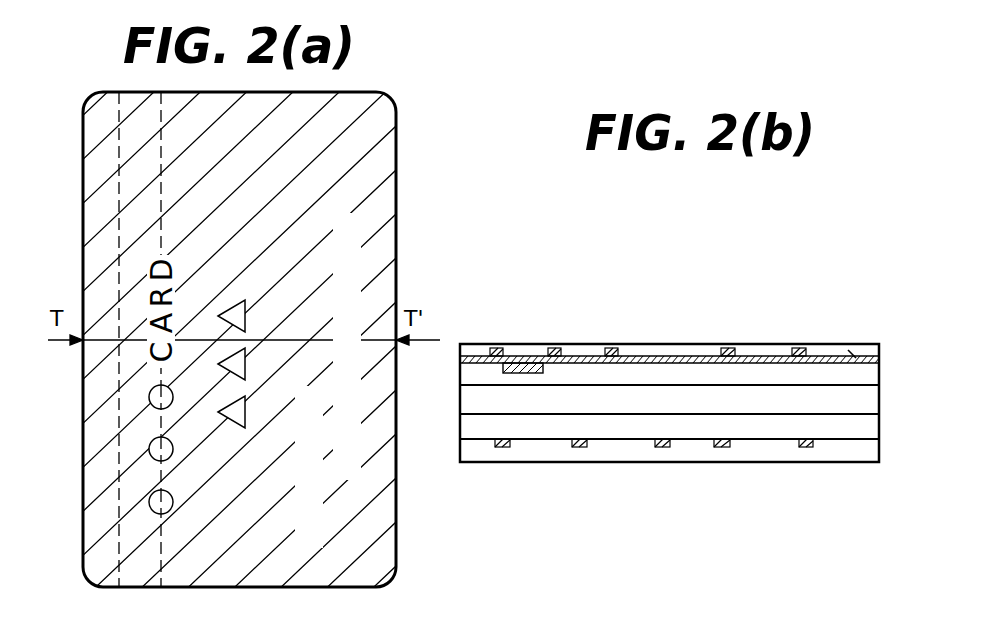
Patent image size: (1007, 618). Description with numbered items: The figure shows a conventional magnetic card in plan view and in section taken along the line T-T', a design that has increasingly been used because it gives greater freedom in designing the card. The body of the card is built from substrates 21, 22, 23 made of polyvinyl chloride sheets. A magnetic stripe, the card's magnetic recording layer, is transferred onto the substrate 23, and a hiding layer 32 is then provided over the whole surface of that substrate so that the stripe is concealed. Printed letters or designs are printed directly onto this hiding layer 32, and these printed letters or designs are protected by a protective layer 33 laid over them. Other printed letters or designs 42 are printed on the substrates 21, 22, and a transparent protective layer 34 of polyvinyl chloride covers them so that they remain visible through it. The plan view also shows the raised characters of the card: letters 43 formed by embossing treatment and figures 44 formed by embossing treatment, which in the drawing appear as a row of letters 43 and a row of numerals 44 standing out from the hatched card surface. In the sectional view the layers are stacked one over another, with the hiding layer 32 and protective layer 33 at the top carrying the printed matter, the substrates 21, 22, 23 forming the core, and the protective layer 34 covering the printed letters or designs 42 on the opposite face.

The hiding layer 32 is at (853, 352).
The protective layer 33 is at (580, 350).
The printed letters or designs 42 is at (803, 450).
The letters formed by embossing treatment 43 is at (325, 531).
The figures formed by embossing treatment 44 is at (362, 219).
The substrate 21 is at (628, 400).
The substrate 22 is at (694, 425).
The substrate 23 is at (560, 374).
The protective layer 34 is at (846, 452).